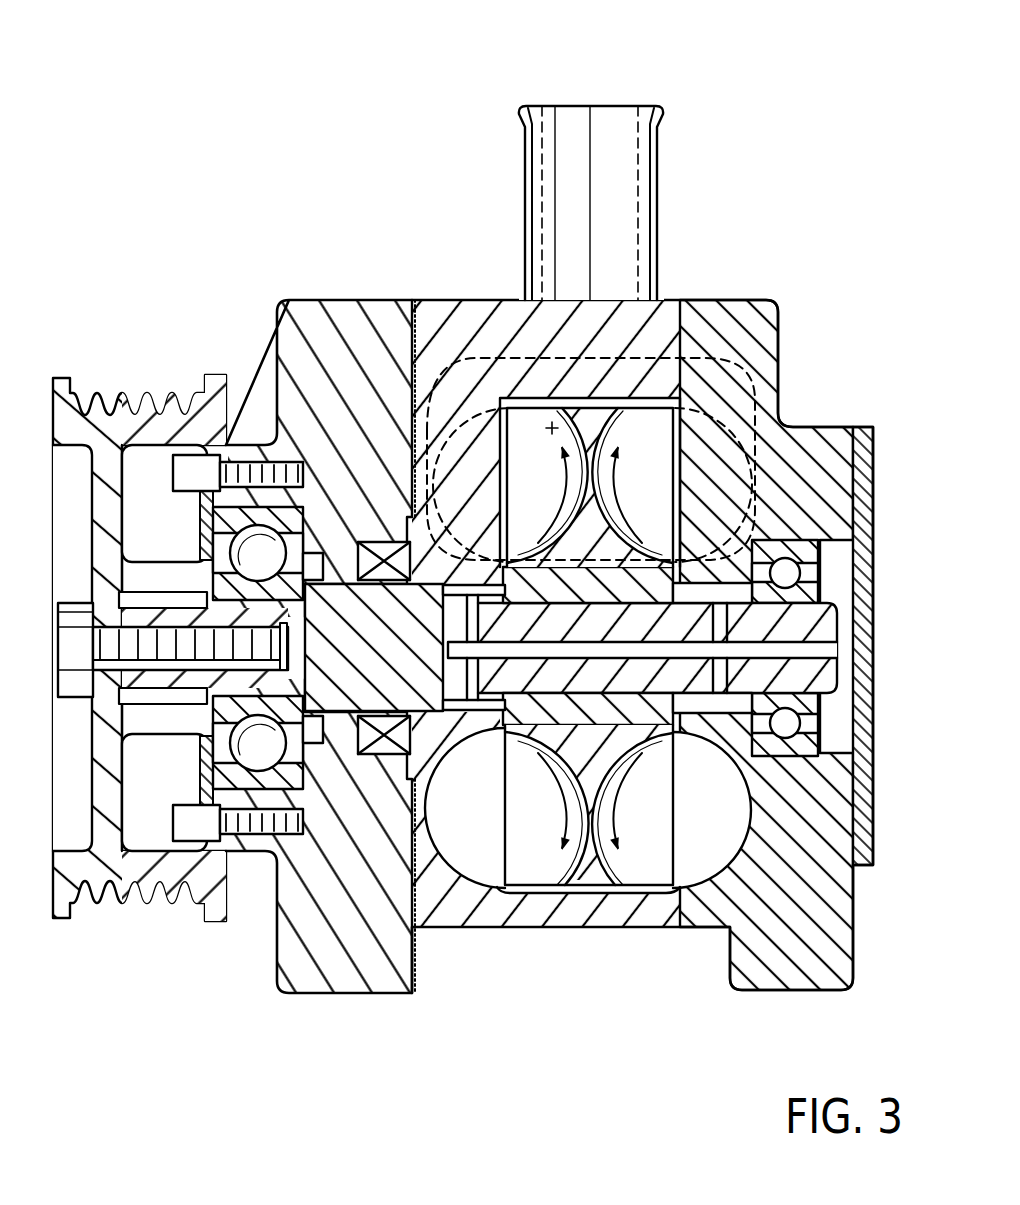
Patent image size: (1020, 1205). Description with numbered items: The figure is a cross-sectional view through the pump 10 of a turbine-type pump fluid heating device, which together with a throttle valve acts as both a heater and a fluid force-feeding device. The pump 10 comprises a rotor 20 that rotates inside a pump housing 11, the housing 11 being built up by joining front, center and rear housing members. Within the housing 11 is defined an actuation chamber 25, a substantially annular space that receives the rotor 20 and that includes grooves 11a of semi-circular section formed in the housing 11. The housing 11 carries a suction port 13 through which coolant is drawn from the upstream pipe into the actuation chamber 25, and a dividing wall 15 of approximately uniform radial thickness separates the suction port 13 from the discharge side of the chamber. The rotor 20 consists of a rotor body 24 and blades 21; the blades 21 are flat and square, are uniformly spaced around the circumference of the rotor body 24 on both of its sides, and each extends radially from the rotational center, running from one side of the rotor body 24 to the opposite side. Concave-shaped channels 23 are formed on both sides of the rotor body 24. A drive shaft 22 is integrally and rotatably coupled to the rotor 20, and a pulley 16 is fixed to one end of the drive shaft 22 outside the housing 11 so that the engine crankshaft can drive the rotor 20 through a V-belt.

The pump 10 is at (255, 287).
The pump housing 11 is at (427, 300).
The grooves 11a is at (456, 880).
The suction port 13 is at (642, 147).
The dividing wall 15 is at (447, 305).
The pulley 16 is at (62, 378).
The rotor 20 is at (690, 440).
The blades 21 is at (465, 305).
The drive shaft 22 is at (338, 722).
The concave-shaped channels 23 is at (550, 424).
The rotor body 24 is at (827, 430).
The actuation chamber 25 is at (623, 392).